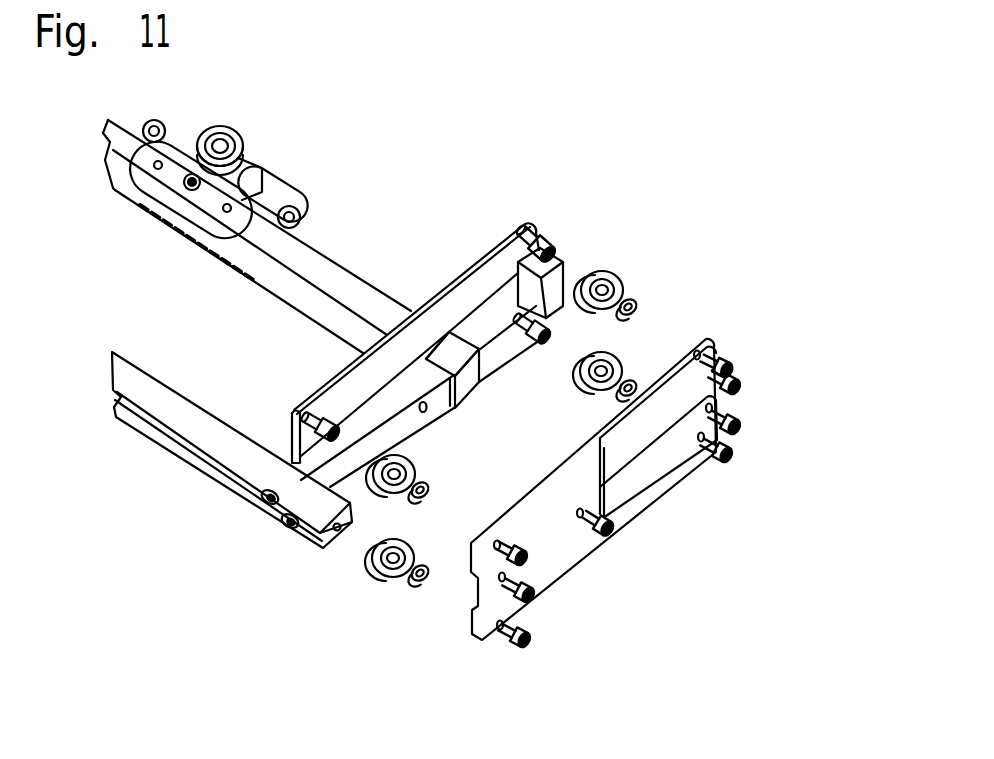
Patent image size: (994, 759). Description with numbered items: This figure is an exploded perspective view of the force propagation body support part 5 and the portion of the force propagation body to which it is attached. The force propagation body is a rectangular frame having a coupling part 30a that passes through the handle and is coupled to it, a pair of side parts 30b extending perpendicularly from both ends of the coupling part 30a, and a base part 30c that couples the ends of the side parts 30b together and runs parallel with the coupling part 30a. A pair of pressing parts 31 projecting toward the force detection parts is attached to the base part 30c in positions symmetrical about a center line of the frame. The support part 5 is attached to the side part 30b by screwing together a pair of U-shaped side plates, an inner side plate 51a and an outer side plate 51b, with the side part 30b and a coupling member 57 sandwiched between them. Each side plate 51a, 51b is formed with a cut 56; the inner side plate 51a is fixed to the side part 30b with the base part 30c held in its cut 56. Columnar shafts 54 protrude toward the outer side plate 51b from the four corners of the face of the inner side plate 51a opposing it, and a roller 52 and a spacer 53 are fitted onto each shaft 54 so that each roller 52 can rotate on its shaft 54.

The force propagation body support part 5 is at (661, 206).
The coupling part 30a is at (207, 427).
The side part 30b is at (440, 386).
The base part 30c is at (310, 258).
The pressing part 31 is at (248, 122).
The inner side plate 51a is at (455, 280).
The outer side plate 51b is at (560, 547).
The roller 52 is at (614, 272).
The spacer 53 is at (640, 306).
The columnar shaft 54 is at (540, 232).
The cut 56 is at (462, 325).
The coupling member 57 is at (570, 285).